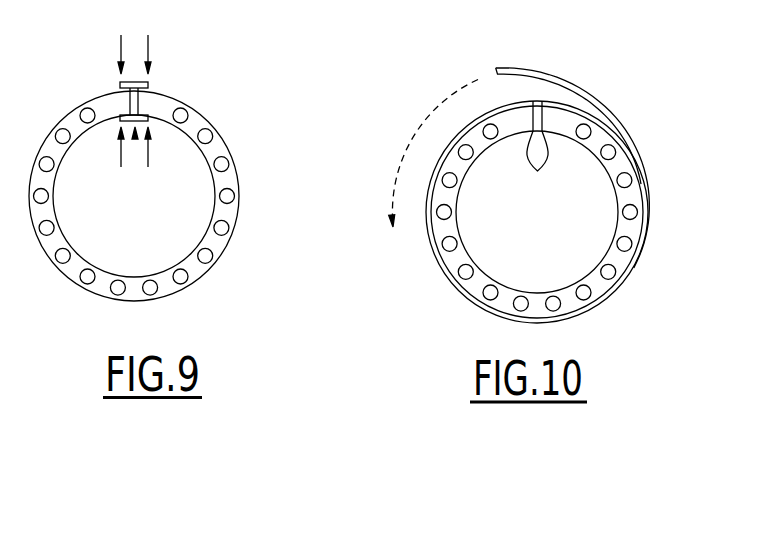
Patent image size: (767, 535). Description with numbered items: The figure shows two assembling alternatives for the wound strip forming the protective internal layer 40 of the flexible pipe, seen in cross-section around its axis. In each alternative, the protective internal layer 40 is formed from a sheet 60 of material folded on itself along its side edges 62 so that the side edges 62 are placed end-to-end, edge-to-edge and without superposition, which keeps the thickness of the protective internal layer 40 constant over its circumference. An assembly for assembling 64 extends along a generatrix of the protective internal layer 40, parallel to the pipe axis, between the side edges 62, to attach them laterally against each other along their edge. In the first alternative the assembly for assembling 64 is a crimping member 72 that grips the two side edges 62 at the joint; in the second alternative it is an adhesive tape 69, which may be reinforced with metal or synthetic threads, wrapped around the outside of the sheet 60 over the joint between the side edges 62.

In FIG. 9, the protective internal layer 40 is at (100, 299).
In FIG. 10, the protective internal layer 40 is at (467, 307).
In FIG. 9, the sheet 60 is at (82, 253).
In FIG. 10, the sheet 60 is at (492, 282).
In FIG. 9, the side edges 62 is at (129, 101).
In FIG. 10, the side edges 62 is at (538, 150).
In FIG. 9, the assembly for assembling 64 is at (135, 138).
In FIG. 10, the assembly for assembling 64 is at (641, 115).
In FIG. 10, the adhesive tape 69 is at (571, 87).
In FIG. 9, the crimping member 72 is at (133, 82).